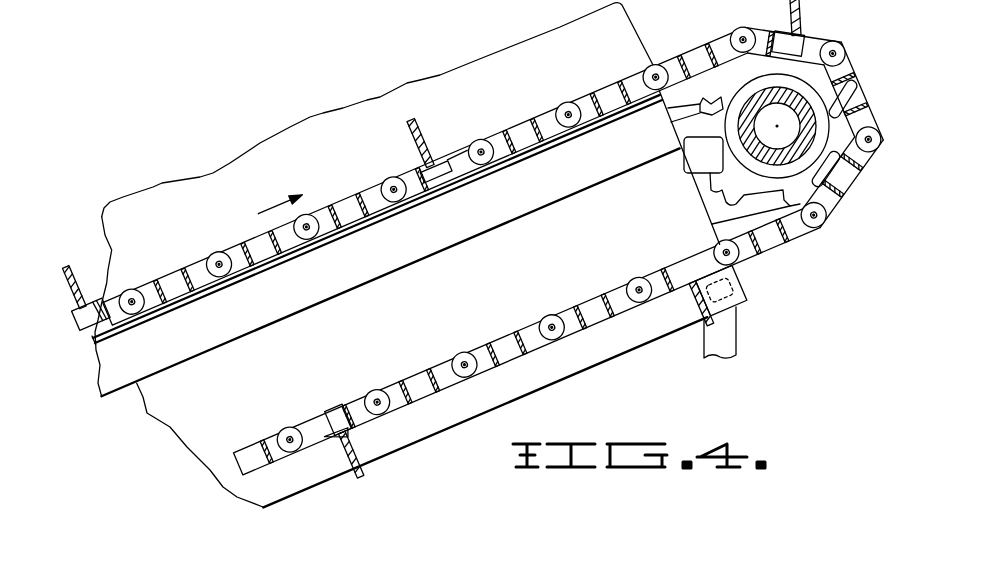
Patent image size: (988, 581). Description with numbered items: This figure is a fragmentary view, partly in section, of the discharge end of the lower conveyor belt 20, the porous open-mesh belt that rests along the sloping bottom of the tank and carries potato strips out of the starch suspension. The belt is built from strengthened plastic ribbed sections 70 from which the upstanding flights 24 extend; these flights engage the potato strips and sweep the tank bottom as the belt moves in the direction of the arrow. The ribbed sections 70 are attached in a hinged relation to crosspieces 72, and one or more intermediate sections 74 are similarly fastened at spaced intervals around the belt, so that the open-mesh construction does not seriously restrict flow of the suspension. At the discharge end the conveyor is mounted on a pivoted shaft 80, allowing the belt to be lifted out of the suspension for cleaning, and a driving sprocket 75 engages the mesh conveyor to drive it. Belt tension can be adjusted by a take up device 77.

The lower conveyor belt 20 is at (197, 260).
The flights 24 is at (421, 133).
The ribbed sections 70 is at (415, 168).
The crosspieces 72 is at (392, 177).
The intermediate sections 74 is at (518, 122).
The driving sprocket 75 is at (818, 72).
The take up device 77 is at (681, 8).
The pivoted shaft 80 is at (743, 296).